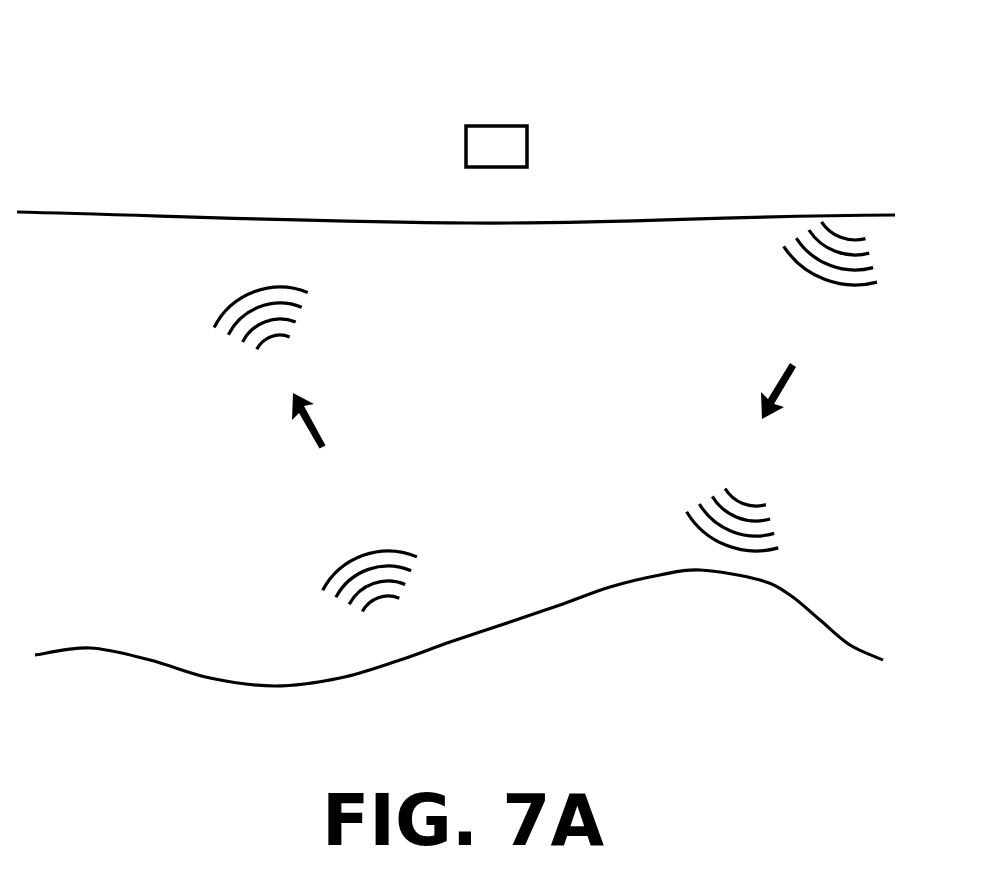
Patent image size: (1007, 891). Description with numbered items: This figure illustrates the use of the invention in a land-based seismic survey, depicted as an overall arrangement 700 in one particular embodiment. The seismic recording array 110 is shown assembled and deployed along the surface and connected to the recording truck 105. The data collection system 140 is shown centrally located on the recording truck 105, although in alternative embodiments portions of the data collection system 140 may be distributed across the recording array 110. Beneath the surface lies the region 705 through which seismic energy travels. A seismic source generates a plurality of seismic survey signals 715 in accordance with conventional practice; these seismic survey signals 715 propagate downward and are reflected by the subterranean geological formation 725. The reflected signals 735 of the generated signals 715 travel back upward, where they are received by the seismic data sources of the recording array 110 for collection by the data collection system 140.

The underwater environment / system 700 is at (73, 378).
The recording truck 105 is at (632, 97).
The seismic recording array 110 is at (268, 172).
The data collection system 140 is at (463, 130).
The water body 705 is at (835, 178).
The seismic survey signals 715 is at (783, 288).
The reflected signals 735 is at (300, 348).
The subterranean geological formation 725 is at (783, 588).